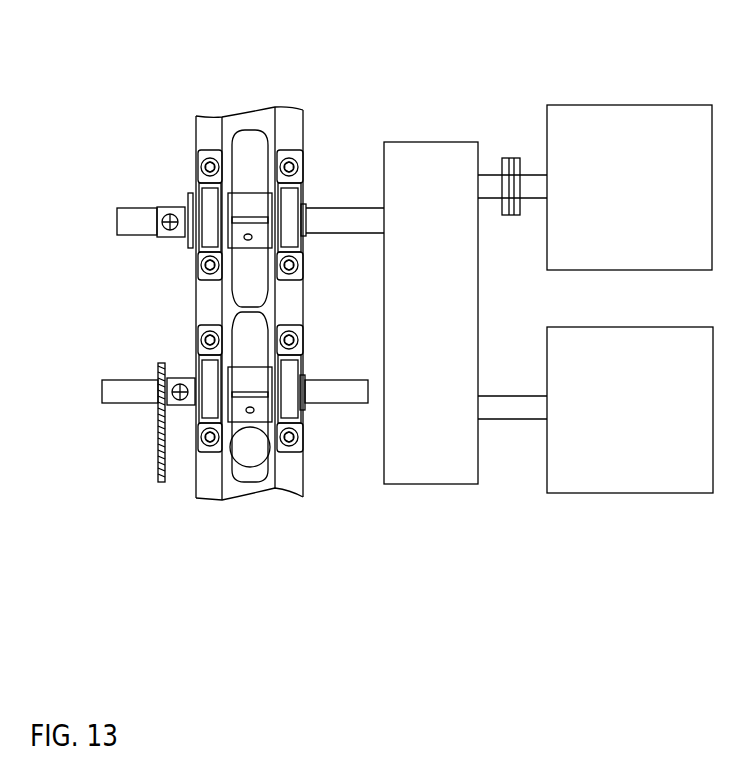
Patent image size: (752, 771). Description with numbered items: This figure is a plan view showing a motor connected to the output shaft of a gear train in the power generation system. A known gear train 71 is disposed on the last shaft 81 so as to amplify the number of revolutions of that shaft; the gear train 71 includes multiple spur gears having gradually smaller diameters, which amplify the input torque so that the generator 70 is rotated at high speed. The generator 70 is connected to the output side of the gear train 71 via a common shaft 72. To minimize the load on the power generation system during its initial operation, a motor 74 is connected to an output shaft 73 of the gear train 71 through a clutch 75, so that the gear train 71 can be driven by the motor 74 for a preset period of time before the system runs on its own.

The generator 70 is at (632, 478).
The gear train 71 is at (437, 480).
The common shaft 72 is at (513, 407).
The output shaft 73 is at (493, 182).
The motor 74 is at (605, 132).
The clutch 75 is at (518, 158).
The last shaft 81 is at (143, 222).